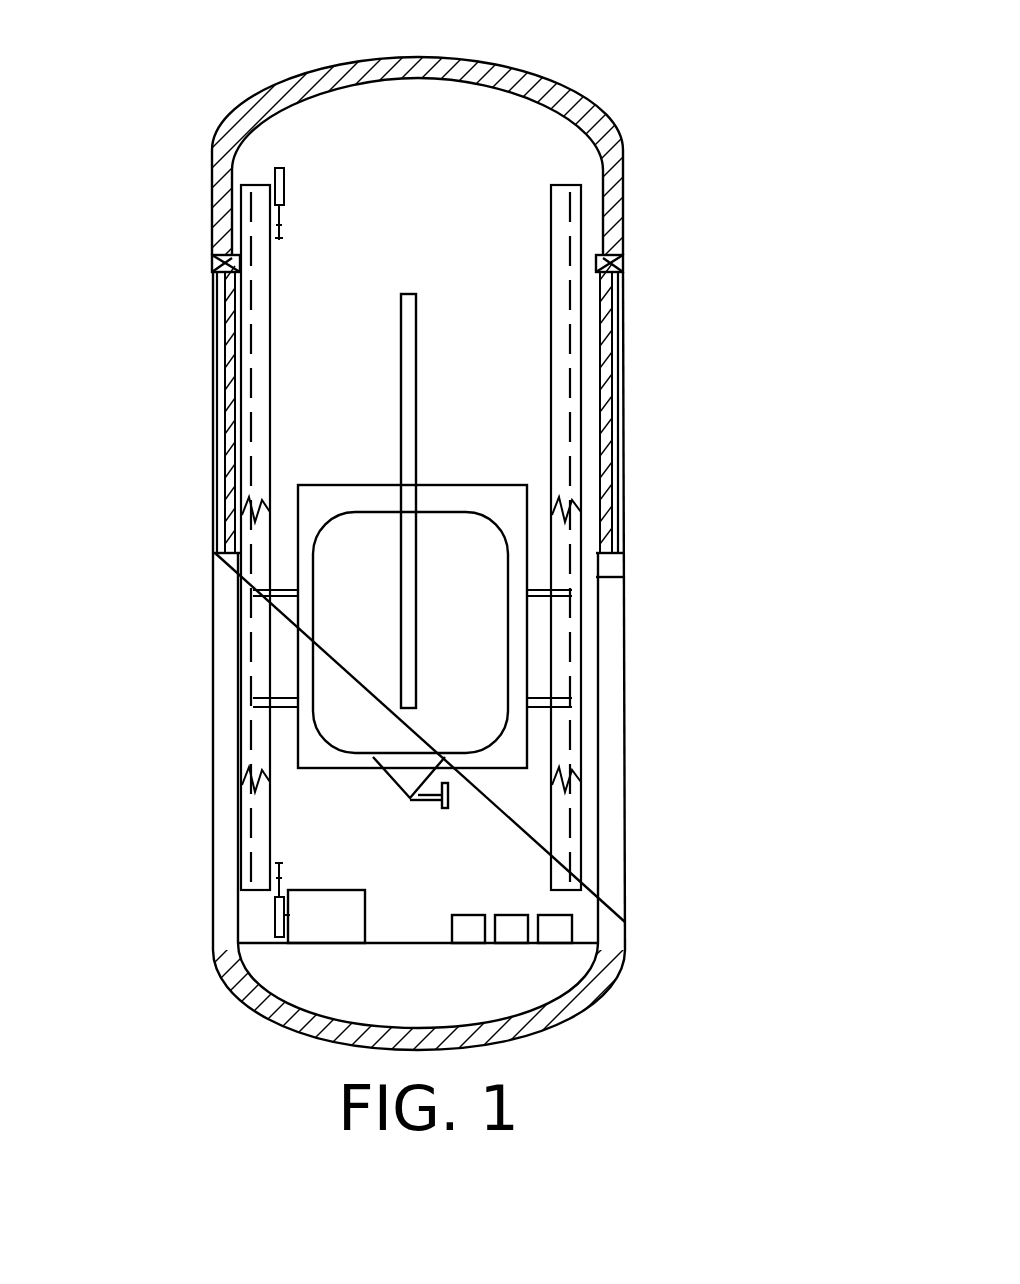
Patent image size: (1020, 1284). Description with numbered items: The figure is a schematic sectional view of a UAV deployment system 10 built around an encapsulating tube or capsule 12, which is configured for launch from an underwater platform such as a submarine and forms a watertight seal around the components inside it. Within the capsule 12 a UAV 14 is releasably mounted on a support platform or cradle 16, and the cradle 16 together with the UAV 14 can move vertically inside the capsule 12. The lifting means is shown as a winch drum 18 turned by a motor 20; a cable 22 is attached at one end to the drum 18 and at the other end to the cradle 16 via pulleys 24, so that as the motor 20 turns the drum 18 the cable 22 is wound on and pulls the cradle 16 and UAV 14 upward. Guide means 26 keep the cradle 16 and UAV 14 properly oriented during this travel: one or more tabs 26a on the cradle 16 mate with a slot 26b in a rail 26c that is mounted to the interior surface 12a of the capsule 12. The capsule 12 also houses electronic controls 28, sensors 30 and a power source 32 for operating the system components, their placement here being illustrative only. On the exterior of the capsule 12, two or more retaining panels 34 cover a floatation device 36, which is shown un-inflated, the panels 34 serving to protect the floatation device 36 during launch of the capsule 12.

The UAV deployment system 10 is at (176, 98).
The capsule 12 is at (596, 996).
The interior surface 12a is at (298, 1003).
The UAV 14 is at (472, 517).
The cradle 16 is at (438, 483).
The winch drum 18 is at (273, 921).
The motor 20 is at (365, 910).
The cable 22 is at (283, 227).
The pulleys 24 is at (288, 188).
The guide means 26 is at (272, 321).
The tabs 26a is at (290, 697).
The slot 26b is at (253, 411).
The rail 26c is at (274, 803).
The electronic controls 28 is at (510, 913).
The sensors 30 is at (547, 913).
The power source 32 is at (462, 913).
The retaining panels 34 is at (213, 341).
The floatation device 36 is at (218, 432).